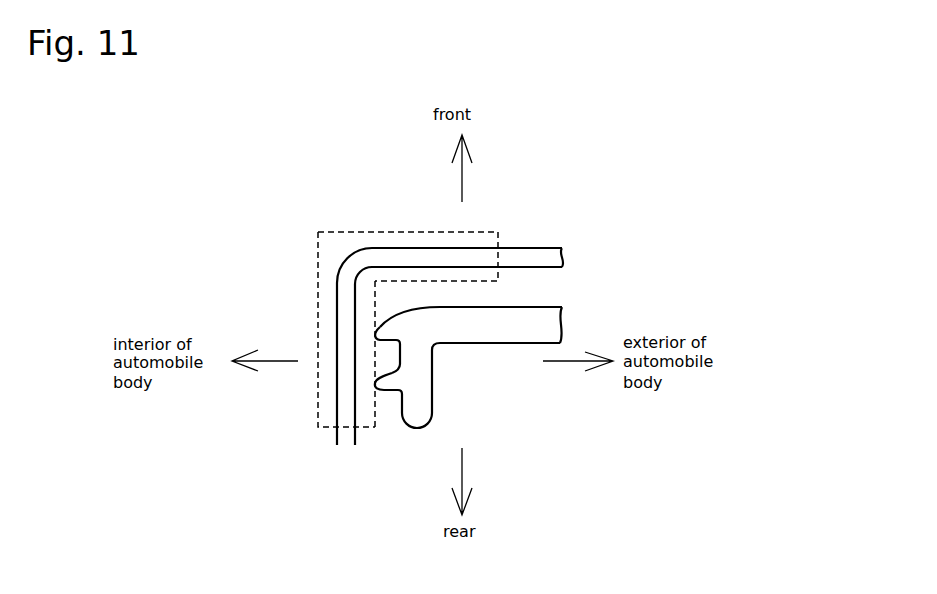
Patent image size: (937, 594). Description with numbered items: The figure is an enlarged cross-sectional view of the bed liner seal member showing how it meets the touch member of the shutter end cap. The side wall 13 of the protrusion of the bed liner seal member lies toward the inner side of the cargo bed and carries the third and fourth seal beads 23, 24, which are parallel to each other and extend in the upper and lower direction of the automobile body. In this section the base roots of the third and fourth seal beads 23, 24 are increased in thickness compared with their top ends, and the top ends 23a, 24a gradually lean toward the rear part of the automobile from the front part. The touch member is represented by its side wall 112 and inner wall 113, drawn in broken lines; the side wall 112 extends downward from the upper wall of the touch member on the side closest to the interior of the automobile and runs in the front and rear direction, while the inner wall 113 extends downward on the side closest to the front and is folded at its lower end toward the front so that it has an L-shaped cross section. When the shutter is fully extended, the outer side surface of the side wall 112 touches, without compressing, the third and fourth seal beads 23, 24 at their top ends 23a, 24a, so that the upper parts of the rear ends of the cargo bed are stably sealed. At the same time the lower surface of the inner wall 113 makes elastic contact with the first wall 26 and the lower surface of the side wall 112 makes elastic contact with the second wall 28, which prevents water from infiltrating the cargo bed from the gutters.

The inner wall 113 is at (418, 238).
The side wall 112 is at (365, 400).
The first wall 26 is at (522, 255).
The second wall 28 is at (347, 418).
The third seal bead 23 is at (387, 327).
The top end of third seal bead 23a is at (378, 333).
The fourth seal bead 24 is at (388, 388).
The top end of fourth seal bead 24a is at (378, 382).
The side wall 13 is at (415, 415).